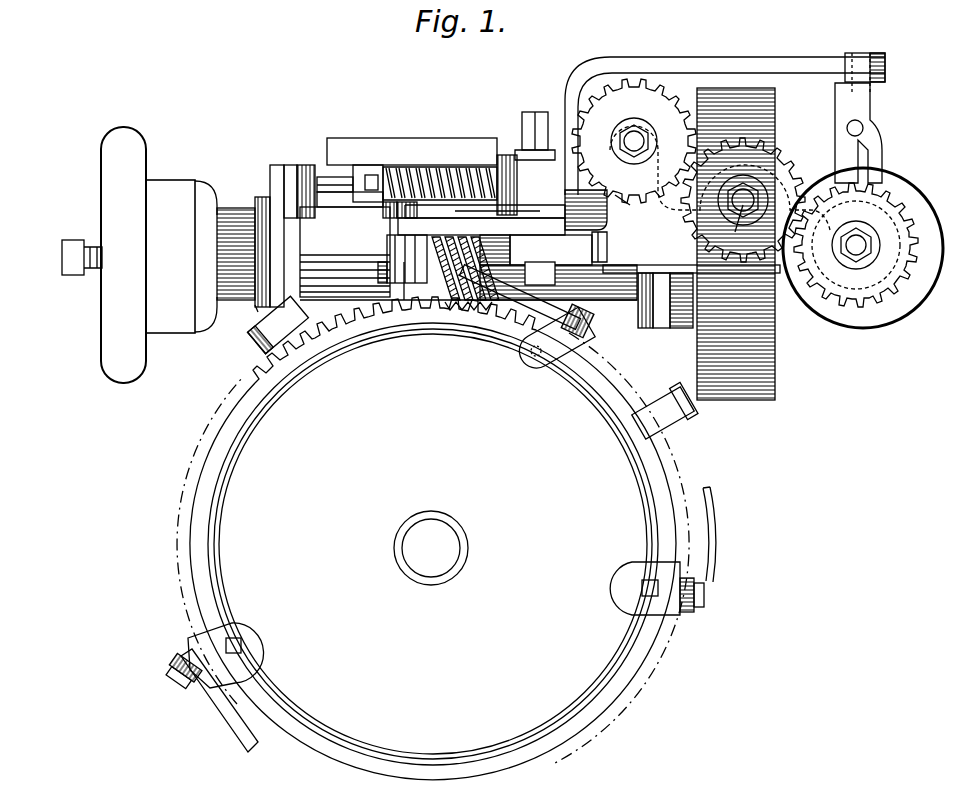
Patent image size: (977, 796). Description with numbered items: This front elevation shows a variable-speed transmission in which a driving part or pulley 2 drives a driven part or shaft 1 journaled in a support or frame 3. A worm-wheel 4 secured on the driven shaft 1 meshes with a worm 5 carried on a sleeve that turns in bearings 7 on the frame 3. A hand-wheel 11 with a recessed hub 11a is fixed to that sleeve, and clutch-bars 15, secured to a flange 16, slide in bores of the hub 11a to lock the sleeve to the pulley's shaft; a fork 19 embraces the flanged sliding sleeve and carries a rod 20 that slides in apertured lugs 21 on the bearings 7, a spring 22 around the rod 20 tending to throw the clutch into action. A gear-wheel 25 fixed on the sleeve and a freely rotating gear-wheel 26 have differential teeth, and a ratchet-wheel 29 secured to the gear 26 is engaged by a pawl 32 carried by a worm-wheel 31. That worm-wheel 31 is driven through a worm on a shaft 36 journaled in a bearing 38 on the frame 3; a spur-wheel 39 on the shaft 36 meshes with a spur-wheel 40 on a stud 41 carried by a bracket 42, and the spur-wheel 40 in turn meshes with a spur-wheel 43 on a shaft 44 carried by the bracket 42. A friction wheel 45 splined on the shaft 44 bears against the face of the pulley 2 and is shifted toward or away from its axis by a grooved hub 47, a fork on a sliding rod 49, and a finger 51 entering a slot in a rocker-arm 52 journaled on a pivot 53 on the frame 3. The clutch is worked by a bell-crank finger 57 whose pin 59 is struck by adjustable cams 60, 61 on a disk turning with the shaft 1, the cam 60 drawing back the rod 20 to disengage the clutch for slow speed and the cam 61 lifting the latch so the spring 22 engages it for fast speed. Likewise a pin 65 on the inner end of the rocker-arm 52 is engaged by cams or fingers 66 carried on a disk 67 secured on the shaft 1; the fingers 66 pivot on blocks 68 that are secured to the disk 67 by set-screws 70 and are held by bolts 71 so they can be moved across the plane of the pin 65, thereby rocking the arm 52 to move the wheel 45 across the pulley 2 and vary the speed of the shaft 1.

The driven part or shaft 1 is at (469, 548).
The driving part or pulley 2 is at (775, 368).
The support or frame 3 is at (233, 185).
The worm-wheel 4 is at (340, 322).
The worm 5 is at (470, 241).
The bearings 7 is at (328, 240).
The hand-wheel 11 is at (104, 255).
The recessed hub 11a is at (181, 256).
The clutch-bars 15 is at (237, 210).
The flange 16 is at (260, 306).
The fork 19 is at (279, 236).
The rod 20 is at (327, 177).
The apertured lugs or bearings 21 is at (300, 191).
The spring 22 is at (412, 170).
The gear-wheel 25 is at (736, 244).
The gear-wheel 26 is at (694, 268).
The ratchet-wheel 29 is at (659, 268).
The worm-wheel 31 is at (646, 329).
The pawl 32 is at (678, 329).
The shaft 36 is at (755, 205).
The bearing 38 is at (628, 208).
The spur-wheel 39 is at (634, 141).
The spur-wheel 40 is at (743, 176).
The stud 41 is at (744, 227).
The bracket 42 is at (869, 245).
The spur-wheel 43 is at (885, 285).
The shaft 44 is at (863, 240).
The wheel 45 is at (922, 292).
The grooved hub 47 is at (876, 160).
The rod 49 is at (846, 128).
The finger 51 is at (848, 55).
The rocker-arm 52 is at (620, 57).
The pivot 53 is at (537, 110).
The finger 57 is at (474, 200).
The pin 59 is at (432, 300).
The cam 60 is at (507, 267).
The cam 61 is at (700, 440).
The stud or pin 65 is at (408, 300).
The cams or fingers 66 is at (510, 312).
The disk 67 is at (433, 544).
The blocks 68 is at (540, 360).
The set-screws 70 is at (243, 645).
The bolts or screws 71 is at (451, 495).